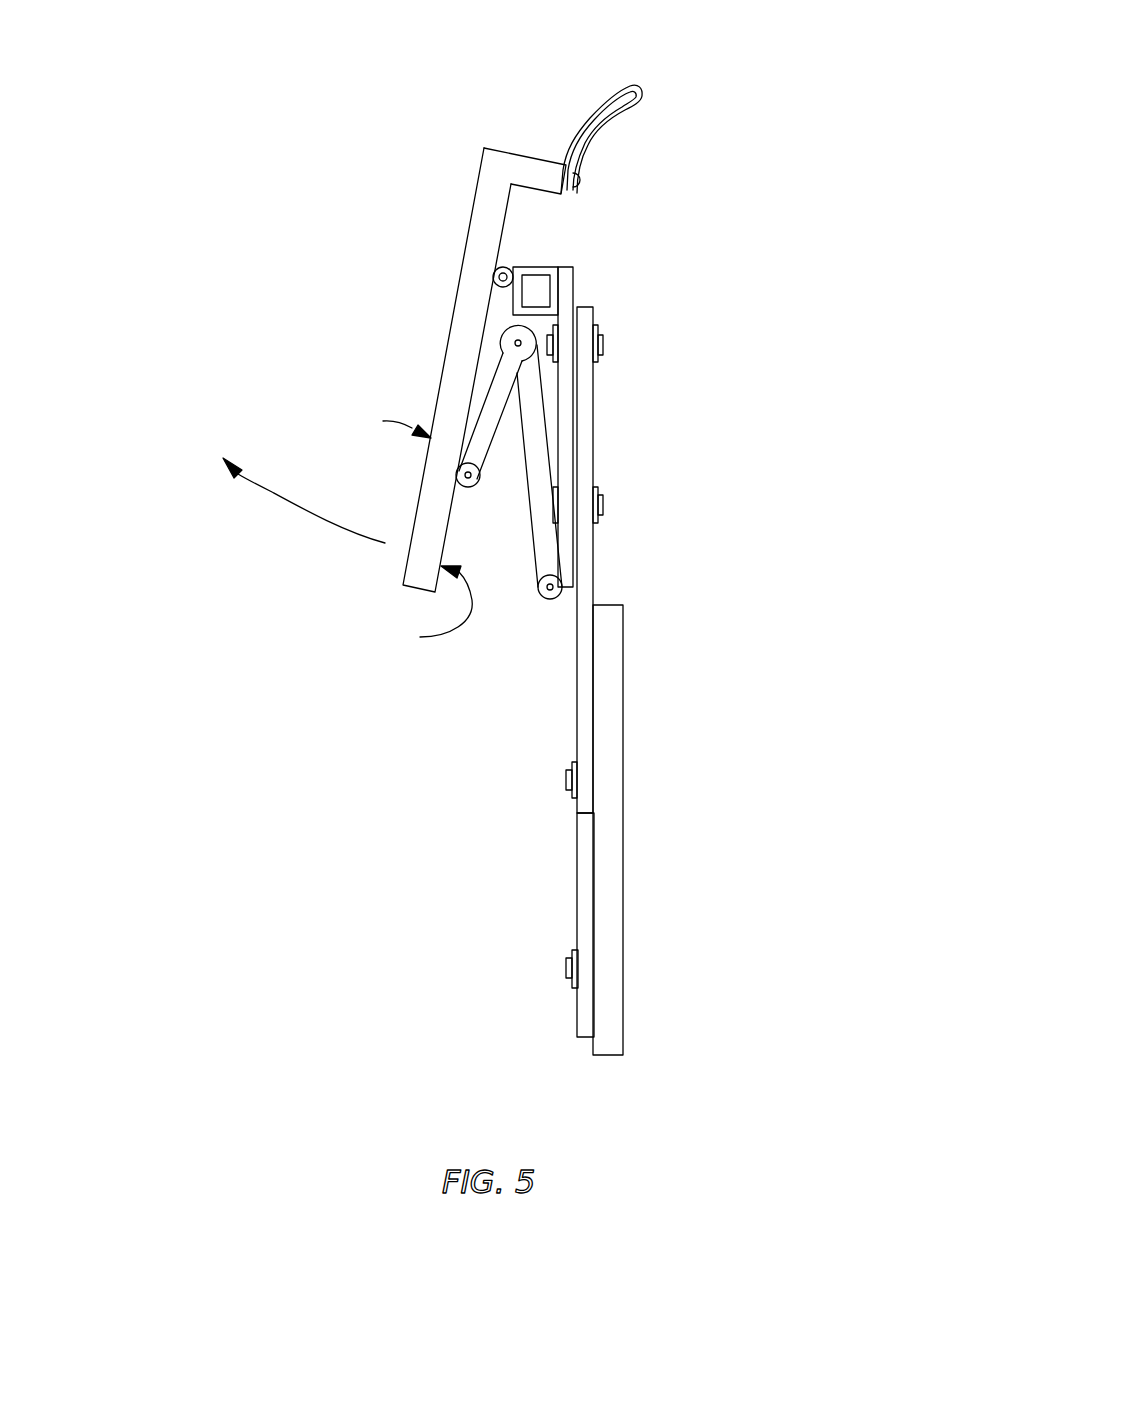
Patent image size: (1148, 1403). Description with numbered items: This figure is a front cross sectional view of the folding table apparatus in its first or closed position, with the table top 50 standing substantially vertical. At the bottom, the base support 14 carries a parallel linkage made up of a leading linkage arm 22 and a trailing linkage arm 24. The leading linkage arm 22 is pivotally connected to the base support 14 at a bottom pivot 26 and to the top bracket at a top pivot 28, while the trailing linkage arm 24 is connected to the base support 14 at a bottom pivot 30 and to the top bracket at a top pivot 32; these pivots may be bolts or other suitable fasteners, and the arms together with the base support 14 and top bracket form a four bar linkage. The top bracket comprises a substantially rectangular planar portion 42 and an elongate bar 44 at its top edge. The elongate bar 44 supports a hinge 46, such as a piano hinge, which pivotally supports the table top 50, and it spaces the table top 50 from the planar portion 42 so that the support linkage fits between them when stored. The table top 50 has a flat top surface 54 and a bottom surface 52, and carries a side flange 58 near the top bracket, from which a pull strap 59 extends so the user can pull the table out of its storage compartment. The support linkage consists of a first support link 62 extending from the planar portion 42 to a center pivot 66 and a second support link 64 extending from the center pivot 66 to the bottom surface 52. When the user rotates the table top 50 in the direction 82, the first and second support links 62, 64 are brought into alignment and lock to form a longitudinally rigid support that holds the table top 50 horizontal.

The base support 14 is at (622, 712).
The leading linkage arm 22 is at (594, 573).
The trailing linkage arm 24 is at (578, 865).
The bottom pivot 26 is at (565, 777).
The top pivot 28 is at (604, 343).
The bottom pivot 30 is at (566, 968).
The top pivot 32 is at (603, 505).
The planar portion 42 is at (567, 386).
The elongate bar 44 is at (537, 267).
The hinge 46 is at (508, 266).
The table top 50 is at (483, 267).
The bottom surface 52 is at (420, 637).
The top surface 54 is at (383, 421).
The side flange 58 is at (520, 152).
The pull strap 59 is at (637, 88).
The first support link 62 is at (533, 460).
The second support link 64 is at (495, 395).
The center pivot 66 is at (520, 342).
The direction of rotation 82 is at (296, 518).